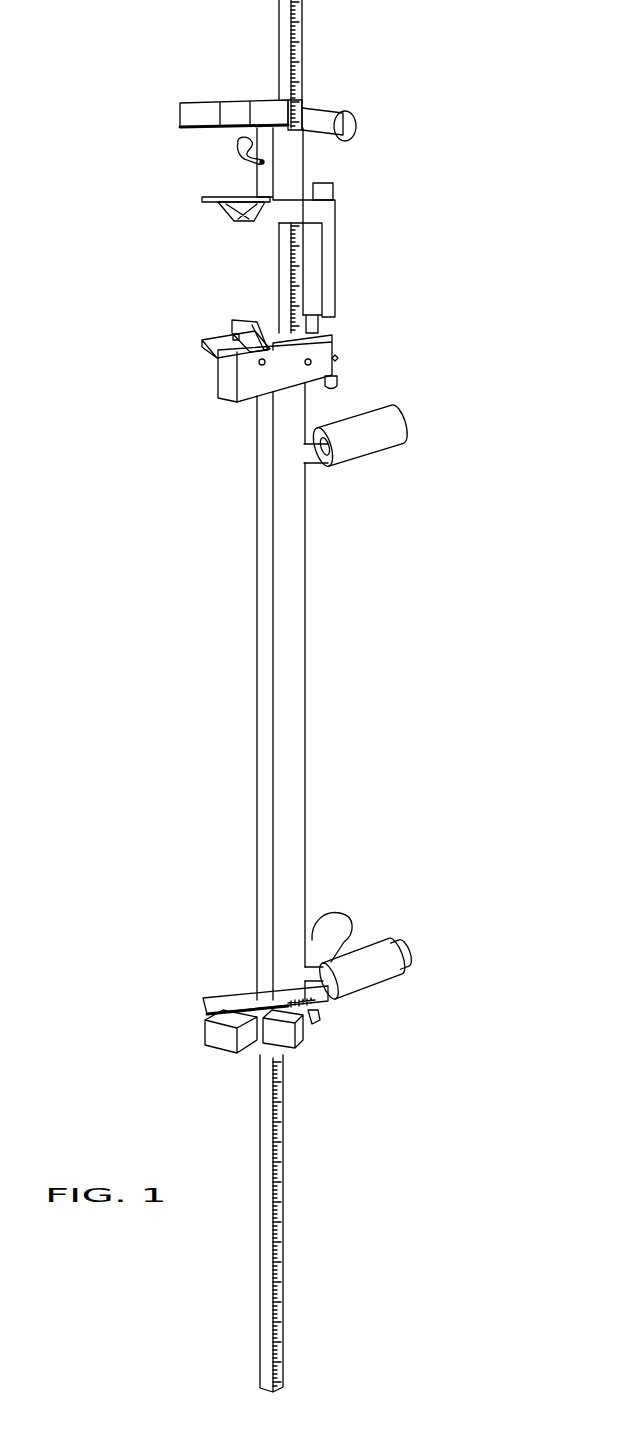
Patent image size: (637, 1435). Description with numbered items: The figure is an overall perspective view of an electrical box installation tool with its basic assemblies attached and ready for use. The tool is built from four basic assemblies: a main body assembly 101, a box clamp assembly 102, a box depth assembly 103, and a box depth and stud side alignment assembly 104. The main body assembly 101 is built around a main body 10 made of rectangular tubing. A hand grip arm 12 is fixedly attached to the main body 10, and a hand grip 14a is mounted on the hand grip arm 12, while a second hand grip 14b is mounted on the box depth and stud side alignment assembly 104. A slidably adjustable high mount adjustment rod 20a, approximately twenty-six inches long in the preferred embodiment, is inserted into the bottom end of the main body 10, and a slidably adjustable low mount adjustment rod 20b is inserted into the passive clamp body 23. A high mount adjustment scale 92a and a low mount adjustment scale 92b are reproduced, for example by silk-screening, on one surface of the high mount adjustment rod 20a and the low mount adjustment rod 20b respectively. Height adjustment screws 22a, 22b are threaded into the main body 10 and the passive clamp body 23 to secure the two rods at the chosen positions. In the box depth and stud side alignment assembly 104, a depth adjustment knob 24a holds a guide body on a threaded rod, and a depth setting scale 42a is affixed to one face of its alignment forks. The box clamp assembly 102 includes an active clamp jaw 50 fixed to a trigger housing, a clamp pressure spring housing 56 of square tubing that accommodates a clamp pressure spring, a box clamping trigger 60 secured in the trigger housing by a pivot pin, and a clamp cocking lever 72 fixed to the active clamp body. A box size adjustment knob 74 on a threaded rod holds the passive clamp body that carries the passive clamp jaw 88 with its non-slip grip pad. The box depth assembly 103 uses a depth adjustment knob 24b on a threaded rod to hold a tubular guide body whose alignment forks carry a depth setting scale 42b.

The main body 10 is at (290, 691).
The hand grip arm 12 is at (312, 457).
The hand grip 14a is at (387, 433).
The second hand grip 14b is at (366, 957).
The high mount adjustment rod 20a is at (268, 1145).
The low mount adjustment rod 20b is at (288, 45).
The height adjustment screw 22a is at (320, 1017).
The height adjustment screw 22b is at (240, 141).
The passive clamp body 23 is at (293, 158).
The depth adjustment knob 24a is at (410, 950).
The depth adjustment knob 24b is at (357, 127).
The depth setting scale 42a is at (312, 938).
The depth setting scale 42b is at (312, 110).
The active clamp jaw 50 is at (237, 327).
The clamp pressure spring housing 56 is at (337, 383).
The box clamping trigger 60 is at (230, 333).
The clamp cocking lever 72 is at (336, 357).
The box size adjustment knob 74 is at (323, 195).
The passive clamp jaw 88 is at (232, 212).
The high mount adjustment scale 92a is at (277, 1120).
The low mount adjustment scale 92b is at (300, 58).
The main body assembly 101 is at (217, 678).
The box clamp assembly 102 is at (352, 257).
The box depth assembly 103 is at (165, 116).
The box depth and stud side alignment assembly 104 is at (182, 1029).